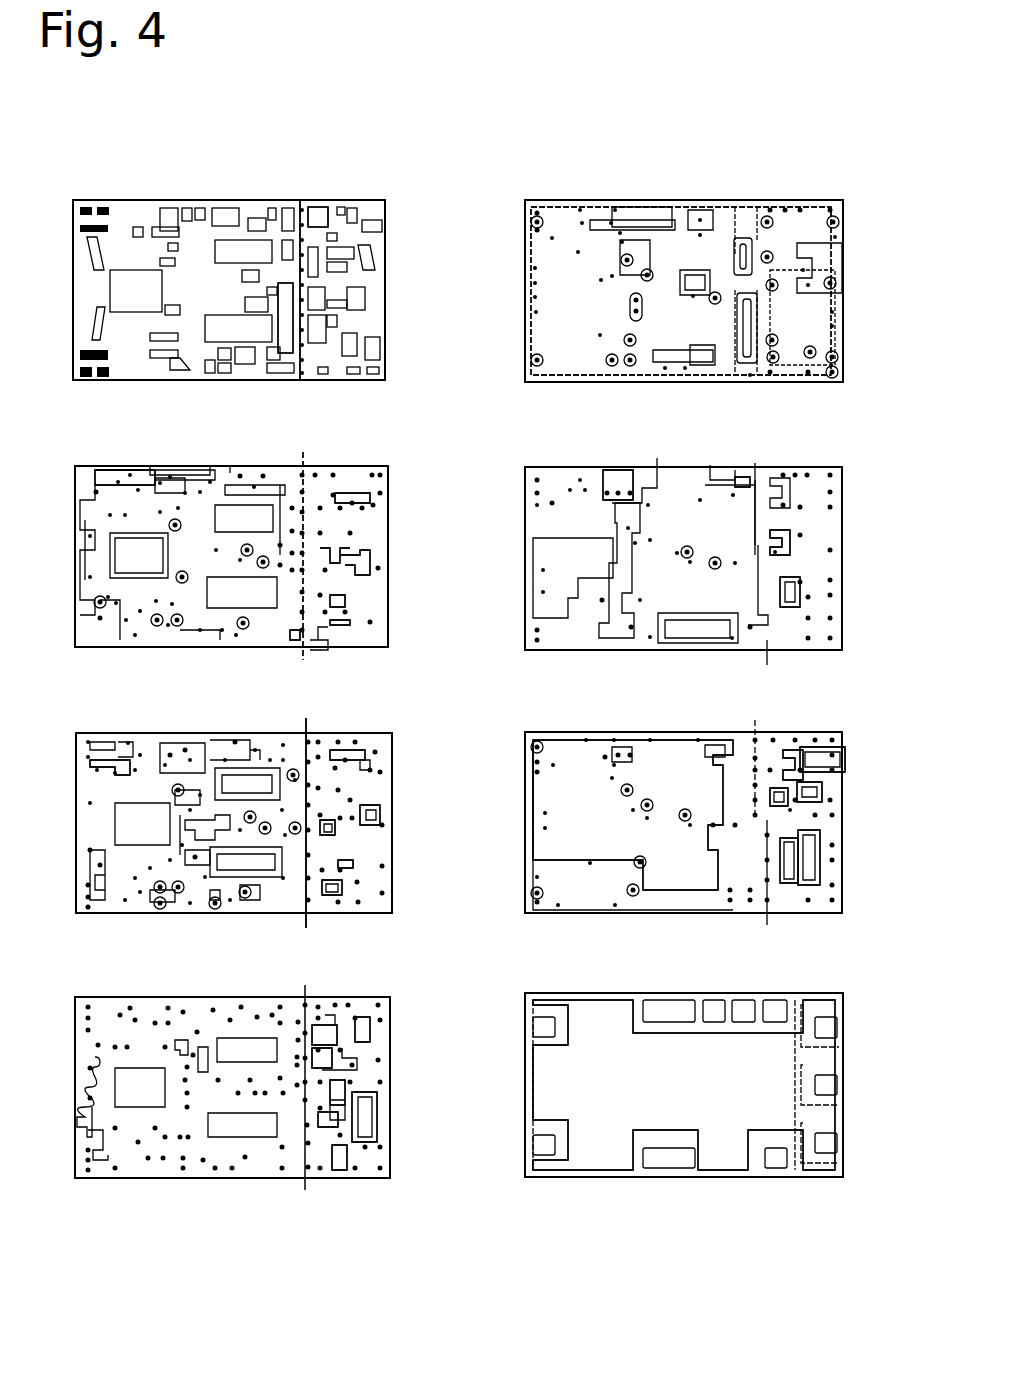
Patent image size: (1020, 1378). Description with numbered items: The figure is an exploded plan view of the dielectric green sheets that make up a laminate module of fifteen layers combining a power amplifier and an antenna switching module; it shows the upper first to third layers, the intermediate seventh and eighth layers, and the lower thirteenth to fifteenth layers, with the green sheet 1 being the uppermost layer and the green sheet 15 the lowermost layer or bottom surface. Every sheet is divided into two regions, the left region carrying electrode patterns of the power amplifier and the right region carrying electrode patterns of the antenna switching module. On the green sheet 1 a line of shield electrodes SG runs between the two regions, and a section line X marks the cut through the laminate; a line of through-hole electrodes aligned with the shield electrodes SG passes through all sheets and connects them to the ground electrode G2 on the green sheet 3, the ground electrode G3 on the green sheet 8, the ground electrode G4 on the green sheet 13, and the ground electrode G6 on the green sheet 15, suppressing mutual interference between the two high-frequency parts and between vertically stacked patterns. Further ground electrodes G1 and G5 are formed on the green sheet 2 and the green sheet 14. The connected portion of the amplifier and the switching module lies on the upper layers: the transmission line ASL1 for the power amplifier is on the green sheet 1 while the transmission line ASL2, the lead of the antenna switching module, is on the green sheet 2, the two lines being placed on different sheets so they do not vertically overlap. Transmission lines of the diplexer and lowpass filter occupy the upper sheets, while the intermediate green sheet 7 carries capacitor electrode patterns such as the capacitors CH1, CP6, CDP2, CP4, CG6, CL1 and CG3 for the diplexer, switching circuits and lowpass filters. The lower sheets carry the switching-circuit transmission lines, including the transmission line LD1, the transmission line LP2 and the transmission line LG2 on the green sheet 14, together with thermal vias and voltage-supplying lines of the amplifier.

The green sheet (first layer) 1 is at (229, 278).
The green sheet (second layer) 2 is at (231, 551).
The green sheet (third layer) 3 is at (234, 817).
The green sheet (seventh layer) 7 is at (232, 1083).
The green sheet (eighth layer) 8 is at (684, 278).
The green sheet (13th layer) 13 is at (683, 552).
The green sheet (14th layer) 14 is at (685, 815).
The green sheet (15th layer, bottom surface) 15 is at (685, 1071).
The shield electrodes SG is at (305, 226).
The section line X- X is at (40, 290).
The transmission line (for the power amplifier) ASL1 is at (283, 347).
The transmission line (lead of the antenna switching module) ASL2 is at (300, 648).
The ground electrode G1 is at (140, 515).
The ground electrode G2 is at (155, 778).
The ground electrode G3 is at (775, 237).
The ground electrode G4 is at (648, 503).
The ground electrode G5 is at (586, 770).
The ground electrode G6 is at (765, 1094).
The transmission line LD1 is at (800, 760).
The transmission line LP2 is at (812, 795).
The transmission line LG2 is at (812, 862).
The capacitor CH1 is at (332, 1035).
The capacitor CP6 is at (367, 1028).
The capacitor CDP2 is at (337, 1060).
The capacitor CP4 is at (342, 1095).
The capacitor CG6 is at (377, 1123).
The capacitor CL1 is at (340, 1150).
The capacitor CG3 is at (342, 1160).